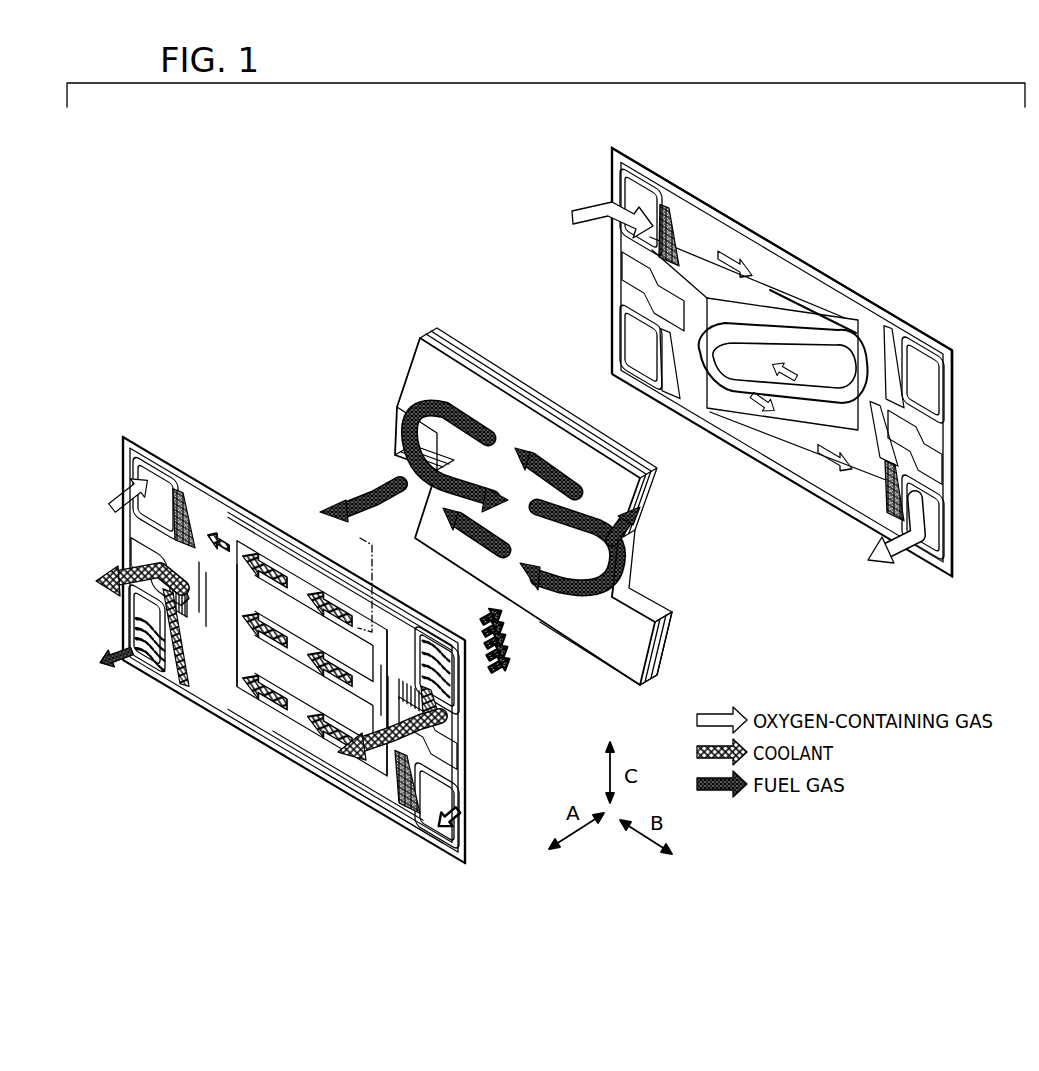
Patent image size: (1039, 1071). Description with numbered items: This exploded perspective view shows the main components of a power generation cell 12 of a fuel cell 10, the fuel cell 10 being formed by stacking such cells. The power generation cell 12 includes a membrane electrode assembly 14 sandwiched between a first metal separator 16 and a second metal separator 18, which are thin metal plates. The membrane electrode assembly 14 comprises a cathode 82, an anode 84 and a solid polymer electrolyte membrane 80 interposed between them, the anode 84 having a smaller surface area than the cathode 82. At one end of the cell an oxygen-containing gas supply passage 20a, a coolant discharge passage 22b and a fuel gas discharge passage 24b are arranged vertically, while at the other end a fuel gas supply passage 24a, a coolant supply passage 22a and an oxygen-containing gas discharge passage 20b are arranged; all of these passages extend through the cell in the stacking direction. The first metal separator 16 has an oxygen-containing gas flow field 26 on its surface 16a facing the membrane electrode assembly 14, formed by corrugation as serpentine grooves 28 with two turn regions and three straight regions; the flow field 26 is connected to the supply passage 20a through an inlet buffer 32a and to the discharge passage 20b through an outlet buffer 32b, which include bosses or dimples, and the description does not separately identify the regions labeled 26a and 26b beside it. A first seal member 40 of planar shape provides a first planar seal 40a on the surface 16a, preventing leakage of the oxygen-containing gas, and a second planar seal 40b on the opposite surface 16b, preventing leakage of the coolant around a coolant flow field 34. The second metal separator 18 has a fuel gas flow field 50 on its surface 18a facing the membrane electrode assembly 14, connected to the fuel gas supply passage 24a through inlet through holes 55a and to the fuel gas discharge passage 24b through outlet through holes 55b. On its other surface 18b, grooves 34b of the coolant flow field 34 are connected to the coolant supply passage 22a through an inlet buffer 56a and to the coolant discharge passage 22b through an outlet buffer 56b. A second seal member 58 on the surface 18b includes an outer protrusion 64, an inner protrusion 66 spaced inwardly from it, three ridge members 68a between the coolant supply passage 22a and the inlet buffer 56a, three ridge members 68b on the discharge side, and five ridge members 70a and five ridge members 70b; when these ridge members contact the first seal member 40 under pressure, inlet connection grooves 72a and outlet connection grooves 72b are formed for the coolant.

The fuel cell 10 is at (546, 161).
The power generation cell 12 is at (312, 239).
The membrane electrode assembly 14 is at (432, 340).
The first metal separator 16 is at (609, 146).
The surface 16a is at (744, 455).
The surface 16b is at (786, 480).
The second metal separator 18 is at (121, 434).
The surface 18a is at (278, 756).
The surface 18b is at (239, 733).
The oxygen-containing gas supply passage 20a is at (620, 196).
The oxygen-containing gas discharge passage 20b is at (935, 526).
The coolant supply passage 22a is at (940, 456).
The coolant discharge passage 22b is at (632, 270).
The fuel gas supply passage 24a is at (936, 404).
The fuel gas discharge passage 24b is at (630, 334).
The oxygen-containing gas flow field 26 is at (851, 322).
The inlet connection channel 26a is at (900, 420).
The outlet connection channel 26b is at (656, 330).
The grooves 28 is at (812, 300).
The inlet buffer 32a is at (668, 224).
The outlet buffer 32b is at (906, 482).
The coolant flow field 34 is at (235, 670).
The grooves 34b is at (292, 582).
The first seal member 40 is at (786, 266).
The first planar seal 40a is at (914, 328).
The second planar seal 40b is at (950, 346).
The fuel gas flow field 50 is at (378, 606).
The inlet through holes 55a is at (420, 632).
The outlet through holes 55b is at (182, 692).
The inlet buffer 56a is at (396, 815).
The outlet buffer 56b is at (176, 490).
The second seal member 58 is at (248, 516).
The outer protrusion 64 is at (336, 784).
The inner protrusion 66 is at (374, 805).
The ridge members 68a is at (402, 694).
The ridge members 68b is at (190, 552).
The ridge members 70a is at (446, 714).
The ridge members 70b is at (178, 640).
The inlet connection grooves 72a is at (358, 752).
The outlet connection grooves 72b is at (100, 579).
The solid polymer electrolyte membrane 80 is at (675, 620).
The cathode 82 is at (636, 576).
The anode 84 is at (628, 640).